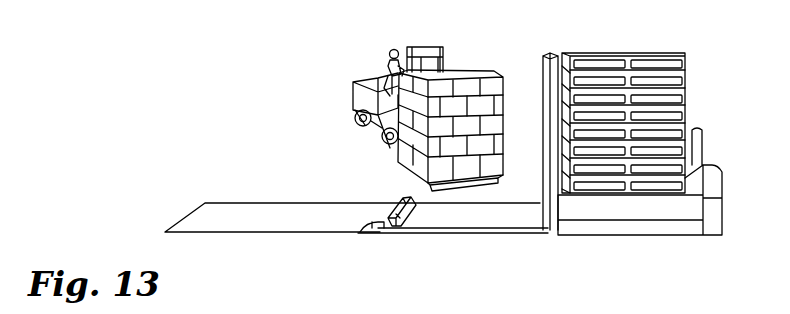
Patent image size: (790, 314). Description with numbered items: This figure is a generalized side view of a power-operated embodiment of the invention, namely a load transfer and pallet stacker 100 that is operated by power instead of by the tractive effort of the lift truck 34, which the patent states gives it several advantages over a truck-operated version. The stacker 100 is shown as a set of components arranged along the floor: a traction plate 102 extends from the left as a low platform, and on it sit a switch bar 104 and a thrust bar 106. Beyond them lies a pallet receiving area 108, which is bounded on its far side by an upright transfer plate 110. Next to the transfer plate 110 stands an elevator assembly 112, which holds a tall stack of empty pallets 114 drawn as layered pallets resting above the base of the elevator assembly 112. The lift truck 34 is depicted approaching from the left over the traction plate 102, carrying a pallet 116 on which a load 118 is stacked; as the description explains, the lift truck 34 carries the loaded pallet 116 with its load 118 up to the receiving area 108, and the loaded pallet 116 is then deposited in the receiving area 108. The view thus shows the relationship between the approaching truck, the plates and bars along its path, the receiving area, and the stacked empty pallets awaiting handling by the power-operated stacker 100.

The lift truck 34 is at (352, 98).
The load transfer and pallet stacker 100 is at (428, 244).
The traction plate 102 is at (232, 207).
The switch bar 104 is at (367, 231).
The thrust bar 106 is at (410, 198).
The pallet receiving area 108 is at (508, 220).
The transfer plate 110 is at (535, 75).
The elevator assembly 112 is at (665, 210).
The stack of empty pallets 114 is at (683, 55).
The pallet 116 is at (481, 180).
The load 118 is at (465, 68).